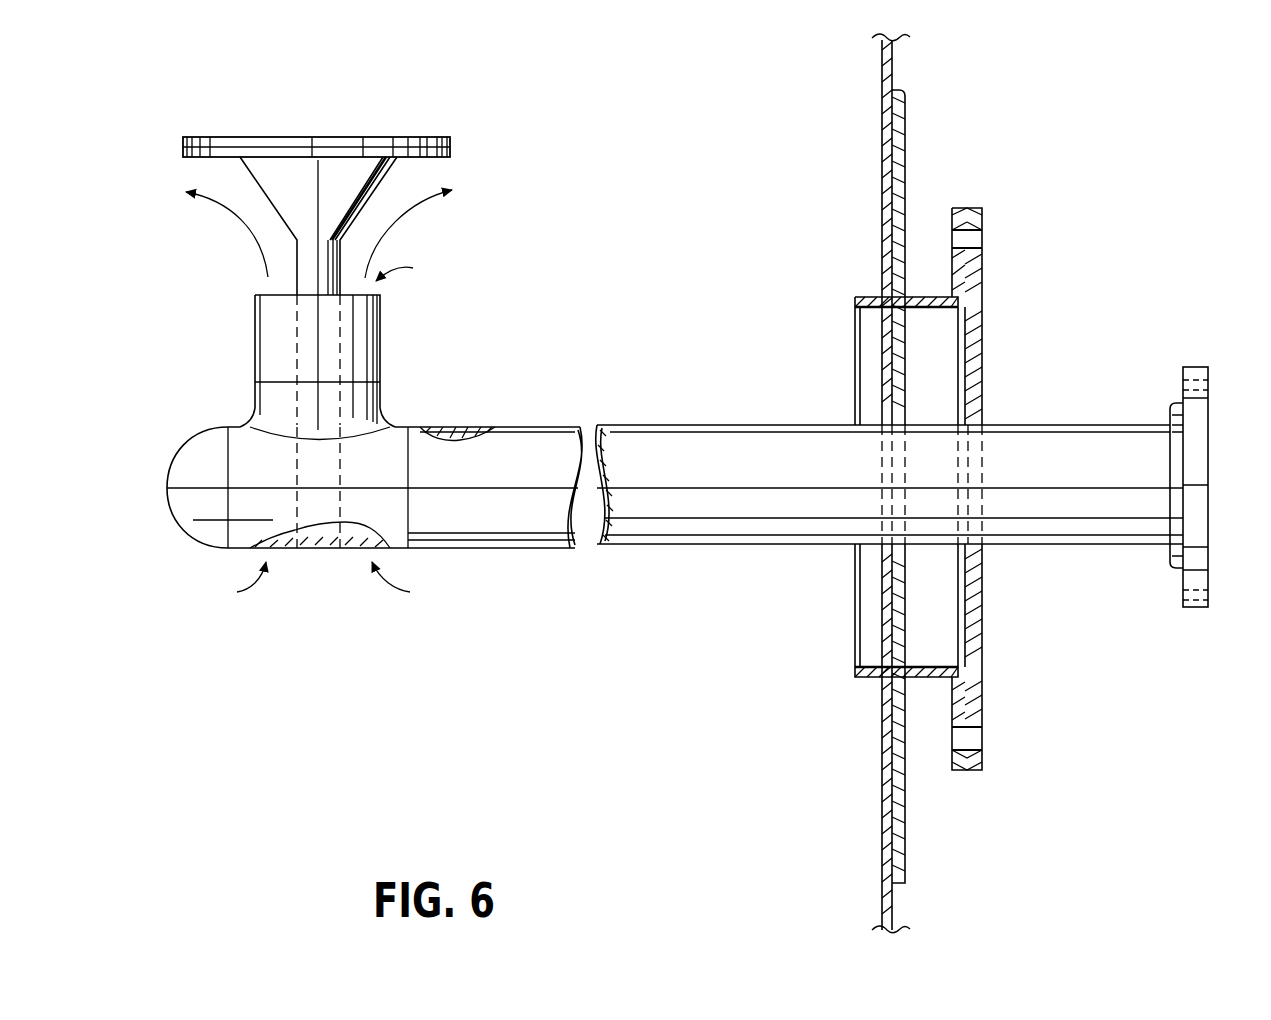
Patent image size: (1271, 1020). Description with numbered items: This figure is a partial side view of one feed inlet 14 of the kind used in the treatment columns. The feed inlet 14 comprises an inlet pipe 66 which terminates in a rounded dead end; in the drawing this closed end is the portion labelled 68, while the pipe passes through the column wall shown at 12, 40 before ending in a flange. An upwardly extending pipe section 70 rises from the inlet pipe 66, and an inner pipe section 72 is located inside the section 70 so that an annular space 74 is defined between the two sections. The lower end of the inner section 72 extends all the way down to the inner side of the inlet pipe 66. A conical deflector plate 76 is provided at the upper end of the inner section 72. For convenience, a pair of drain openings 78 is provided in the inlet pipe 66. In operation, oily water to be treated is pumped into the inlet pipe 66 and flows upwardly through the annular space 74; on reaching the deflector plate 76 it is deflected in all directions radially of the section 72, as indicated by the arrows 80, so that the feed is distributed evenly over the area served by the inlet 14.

The wall 12 is at (892, 907).
The wall liner 40 is at (898, 486).
The feed inlet 14 is at (1210, 550).
The inlet pipe 66 is at (712, 548).
The pipe end cap 68 is at (172, 522).
The upwardly extending pipe section 70 is at (255, 330).
The inner pipe section 72 is at (297, 283).
The annular space 74 is at (412, 270).
The conical deflector plate 76 is at (240, 165).
The drain openings 78 is at (325, 586).
The arrows 80 is at (242, 225).